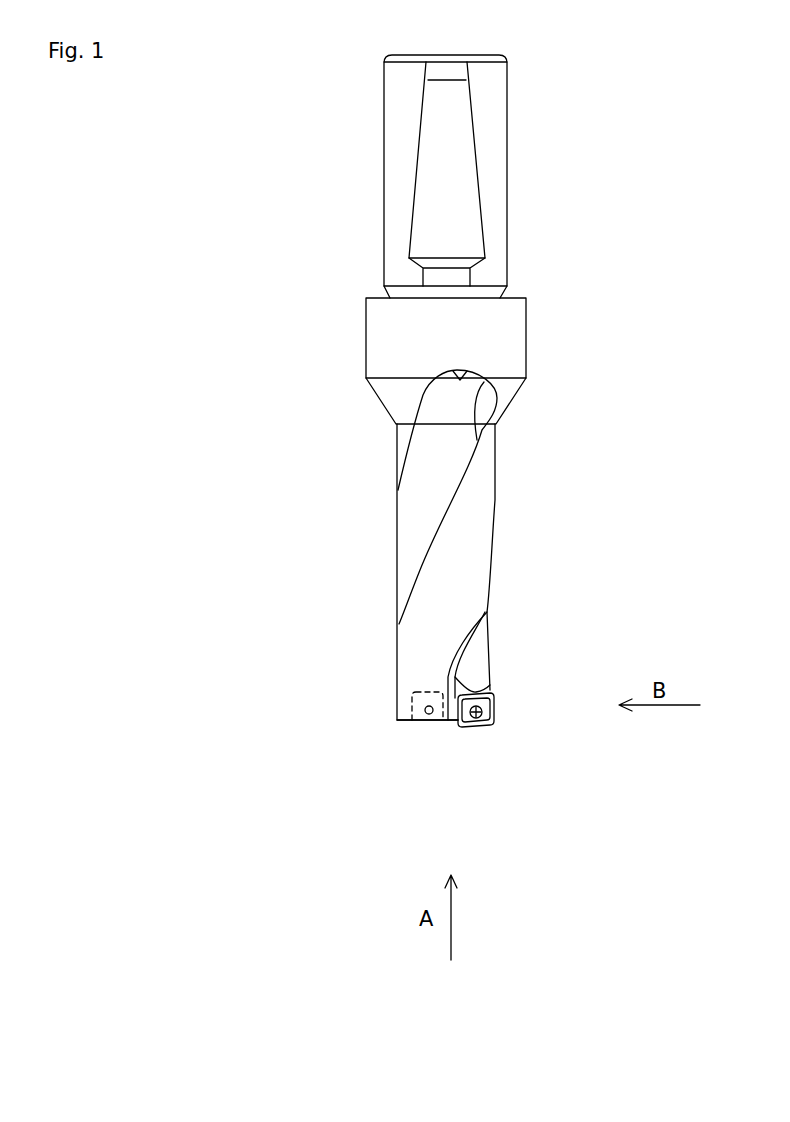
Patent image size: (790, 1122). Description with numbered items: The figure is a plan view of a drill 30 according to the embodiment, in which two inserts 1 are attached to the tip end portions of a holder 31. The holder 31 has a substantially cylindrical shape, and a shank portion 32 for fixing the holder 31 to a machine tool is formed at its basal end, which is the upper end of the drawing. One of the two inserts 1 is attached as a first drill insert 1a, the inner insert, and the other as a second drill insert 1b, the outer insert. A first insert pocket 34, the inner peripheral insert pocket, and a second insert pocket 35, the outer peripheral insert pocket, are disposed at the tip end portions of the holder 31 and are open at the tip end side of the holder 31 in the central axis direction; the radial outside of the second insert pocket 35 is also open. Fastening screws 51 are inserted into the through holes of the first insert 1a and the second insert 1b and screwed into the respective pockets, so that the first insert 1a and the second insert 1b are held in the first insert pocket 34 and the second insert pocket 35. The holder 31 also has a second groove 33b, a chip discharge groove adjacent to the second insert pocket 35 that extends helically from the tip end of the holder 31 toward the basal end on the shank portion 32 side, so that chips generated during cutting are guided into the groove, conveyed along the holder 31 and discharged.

The drill 30 is at (560, 239).
The holder 31 is at (492, 340).
The shank portion 32 is at (366, 58).
The second groove 33b is at (418, 492).
The first insert pocket 34 is at (417, 722).
The second insert pocket 35 is at (487, 678).
The fastening screw 51 is at (415, 710).
The insert 1 is at (510, 815).
The first drill insert 1a is at (428, 722).
The second drill insert 1b is at (478, 726).